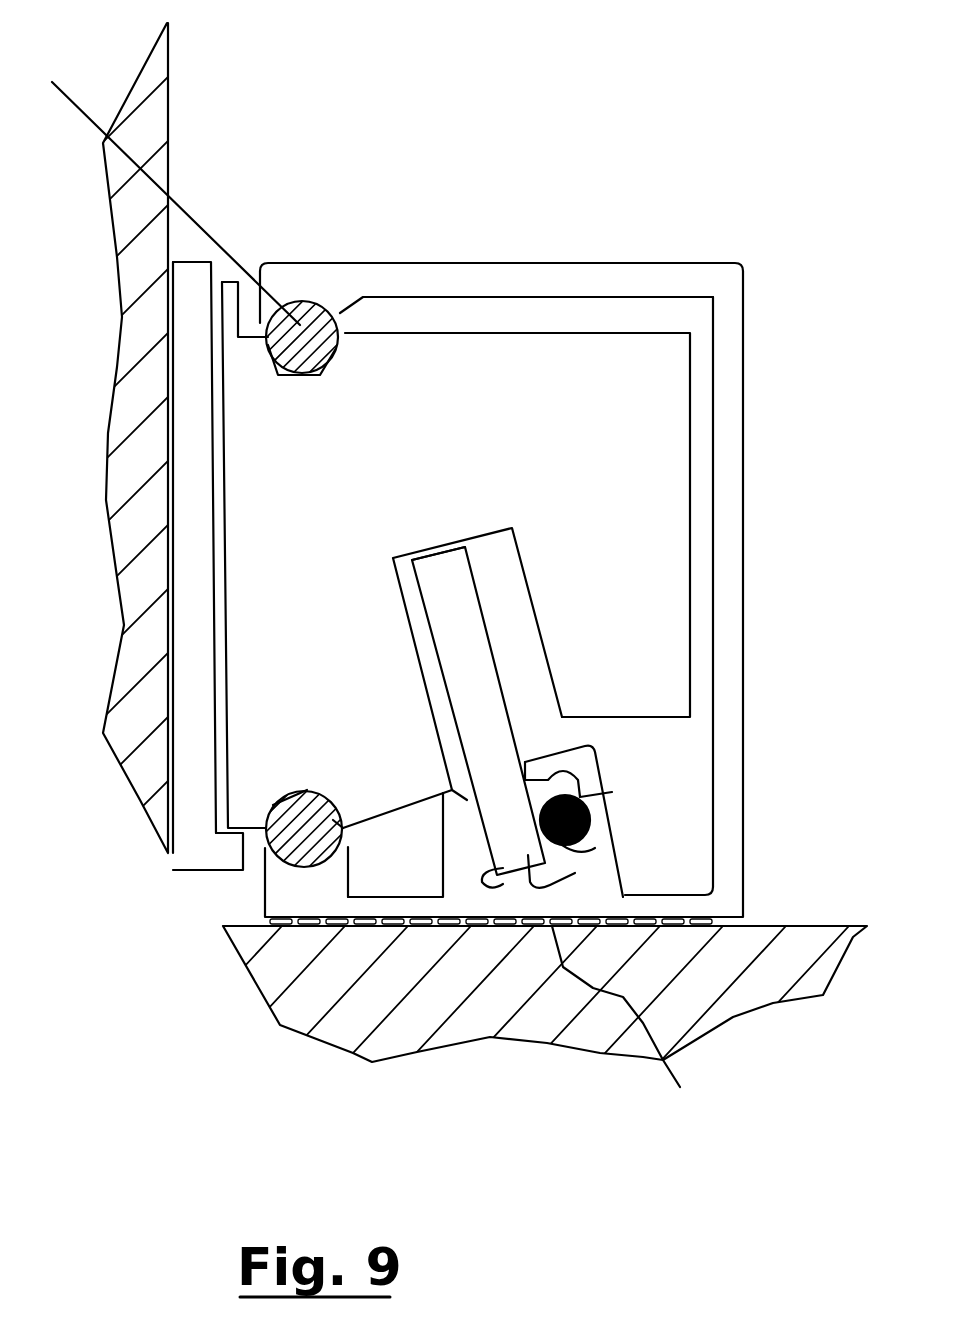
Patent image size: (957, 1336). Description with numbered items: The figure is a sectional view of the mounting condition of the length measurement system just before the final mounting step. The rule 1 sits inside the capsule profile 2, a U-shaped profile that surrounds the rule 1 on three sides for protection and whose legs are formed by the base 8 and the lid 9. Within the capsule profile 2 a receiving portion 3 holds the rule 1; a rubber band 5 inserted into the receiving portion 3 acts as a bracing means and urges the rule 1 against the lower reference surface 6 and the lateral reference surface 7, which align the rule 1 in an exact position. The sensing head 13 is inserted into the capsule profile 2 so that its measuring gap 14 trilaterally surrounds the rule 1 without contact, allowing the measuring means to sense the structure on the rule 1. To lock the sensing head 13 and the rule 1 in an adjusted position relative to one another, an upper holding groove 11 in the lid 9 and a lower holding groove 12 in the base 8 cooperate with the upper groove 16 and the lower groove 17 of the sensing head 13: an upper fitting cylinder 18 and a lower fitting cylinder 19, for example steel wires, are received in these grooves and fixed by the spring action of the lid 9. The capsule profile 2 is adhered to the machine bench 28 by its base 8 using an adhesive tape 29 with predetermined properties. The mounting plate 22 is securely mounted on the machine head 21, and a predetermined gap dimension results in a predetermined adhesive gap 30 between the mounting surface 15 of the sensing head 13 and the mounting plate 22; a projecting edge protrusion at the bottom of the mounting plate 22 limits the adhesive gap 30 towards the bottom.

The rule 1 is at (495, 703).
The capsule profile 2 is at (744, 596).
The receiving portion 3 is at (574, 762).
The rubber band 5 is at (615, 802).
The lower reference surface 6 is at (553, 883).
The lateral reference surface 7 is at (407, 843).
The base 8 is at (548, 879).
The lid 9 is at (501, 548).
The upper holding groove 11 is at (525, 261).
The lower holding groove 12 is at (377, 876).
The sensing head 13 is at (599, 525).
The measuring gap 14 is at (477, 612).
The mounting surface 15 is at (260, 547).
The upper groove 16 is at (326, 408).
The lower groove 17 is at (304, 741).
The upper fitting cylinder 18 is at (171, 162).
The lower fitting cylinder 19 is at (285, 915).
The machine head 21 is at (152, 130).
The mounting plate 22 is at (285, 278).
The machine bench 28 is at (509, 1053).
The adhesive tape 29 is at (644, 1023).
The adhesive gap 30 is at (140, 877).